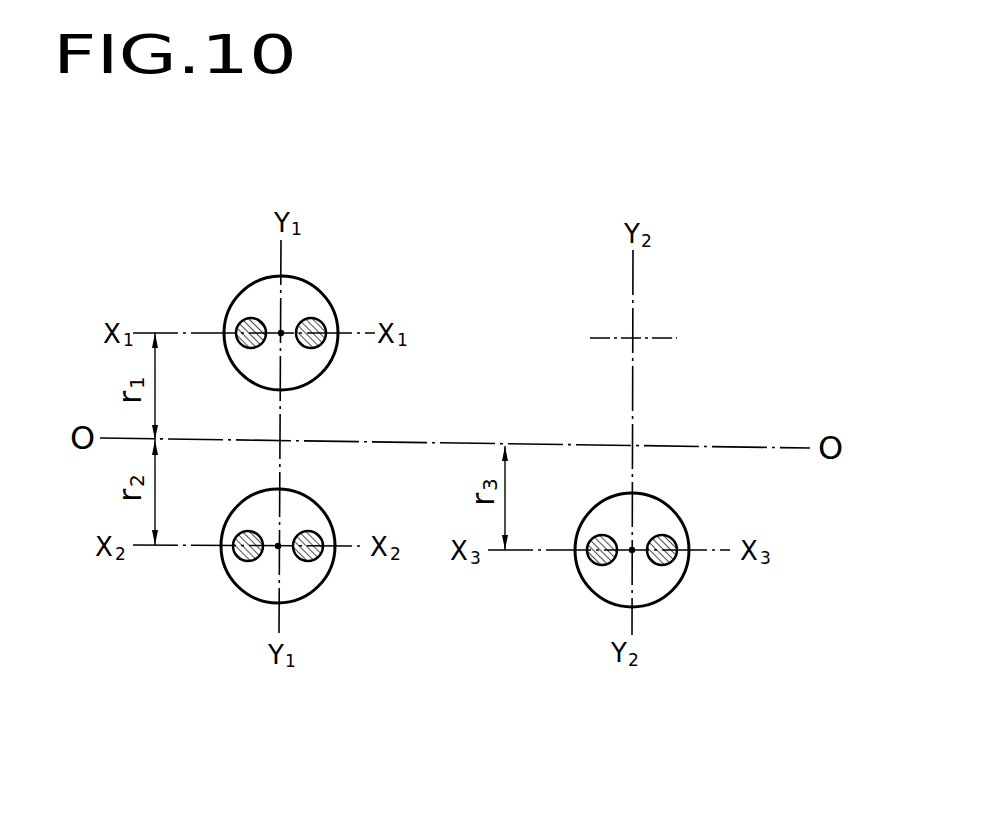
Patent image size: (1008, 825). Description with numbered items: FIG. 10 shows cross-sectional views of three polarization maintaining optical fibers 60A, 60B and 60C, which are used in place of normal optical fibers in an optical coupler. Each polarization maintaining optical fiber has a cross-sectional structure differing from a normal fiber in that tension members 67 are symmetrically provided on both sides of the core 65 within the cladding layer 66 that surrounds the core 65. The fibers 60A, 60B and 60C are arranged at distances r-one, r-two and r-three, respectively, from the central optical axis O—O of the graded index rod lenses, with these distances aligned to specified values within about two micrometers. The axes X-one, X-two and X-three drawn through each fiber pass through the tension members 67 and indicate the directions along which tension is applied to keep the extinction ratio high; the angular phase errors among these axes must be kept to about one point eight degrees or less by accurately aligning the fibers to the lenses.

The polarization maintaining optical fiber 60A is at (678, 590).
The polarization maintaining optical fiber 60B is at (238, 586).
The polarization maintaining optical fiber 60C is at (291, 316).
The core 65 is at (280, 330).
The cladding layer 66 is at (308, 366).
The tension members 67 is at (244, 316).